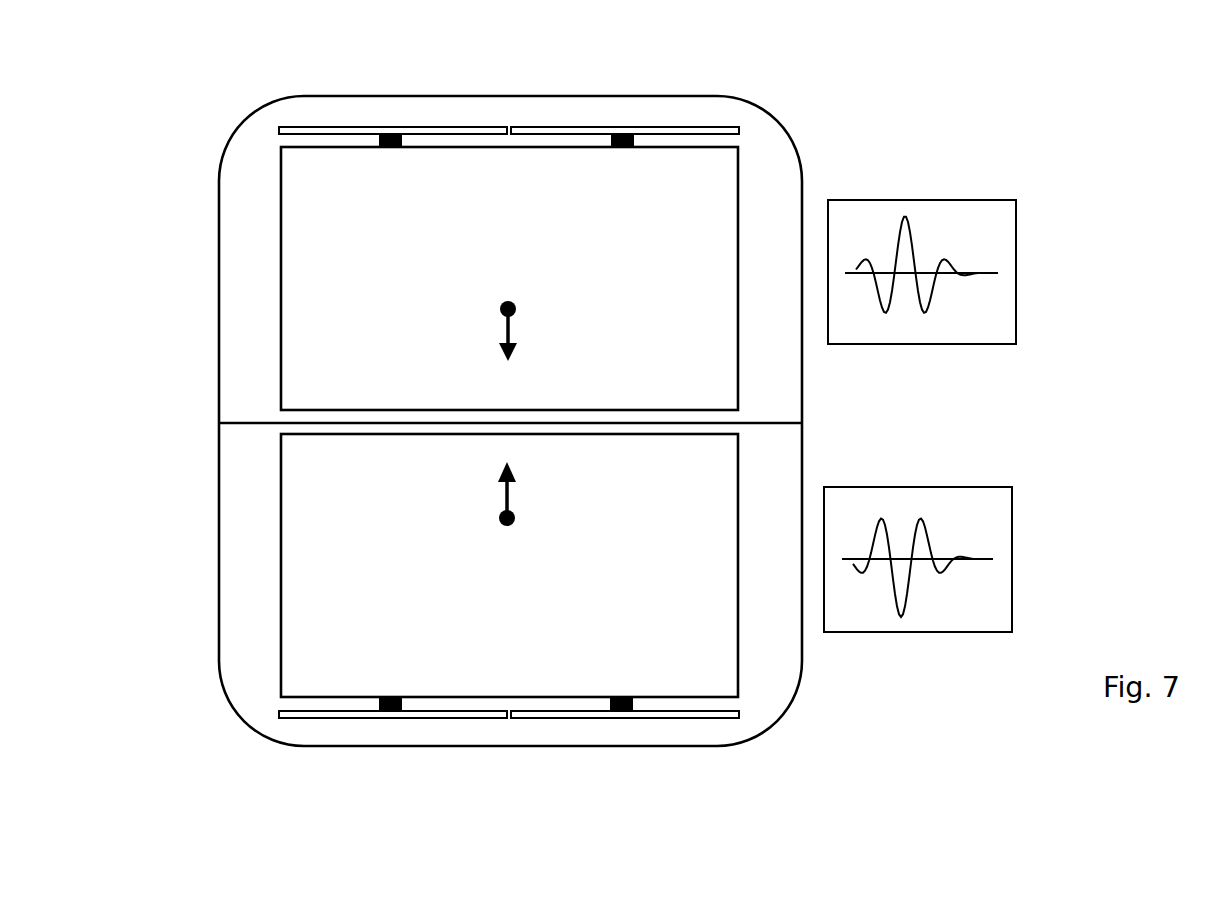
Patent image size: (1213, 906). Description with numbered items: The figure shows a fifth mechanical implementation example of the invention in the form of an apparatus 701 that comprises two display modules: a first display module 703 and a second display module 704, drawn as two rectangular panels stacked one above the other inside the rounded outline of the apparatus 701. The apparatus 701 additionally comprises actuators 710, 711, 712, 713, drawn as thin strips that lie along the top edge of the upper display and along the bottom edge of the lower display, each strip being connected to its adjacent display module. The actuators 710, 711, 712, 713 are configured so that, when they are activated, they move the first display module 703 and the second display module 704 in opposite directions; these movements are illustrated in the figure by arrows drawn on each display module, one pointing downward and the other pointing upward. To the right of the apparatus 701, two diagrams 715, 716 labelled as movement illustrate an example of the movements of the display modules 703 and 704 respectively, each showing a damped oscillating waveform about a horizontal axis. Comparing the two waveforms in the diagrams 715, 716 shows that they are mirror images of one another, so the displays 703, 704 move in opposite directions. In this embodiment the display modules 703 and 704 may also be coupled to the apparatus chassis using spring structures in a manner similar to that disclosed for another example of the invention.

The apparatus 701 is at (250, 720).
The first display module 703 is at (281, 550).
The second display module 704 is at (281, 309).
The actuator 710 is at (436, 718).
The actuator 711 is at (665, 718).
The actuator 712 is at (443, 127).
The actuator 713 is at (673, 127).
The diagram 715 is at (1016, 282).
The diagram 716 is at (1012, 558).